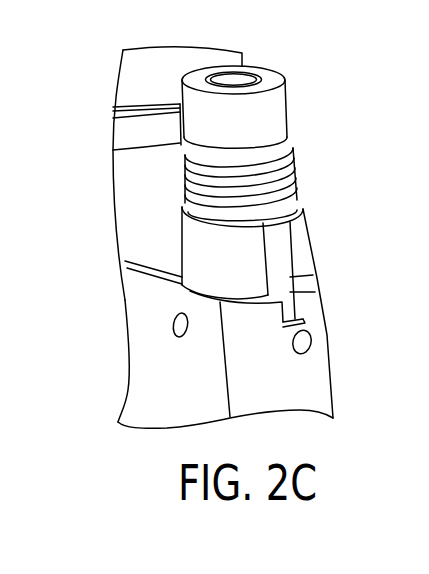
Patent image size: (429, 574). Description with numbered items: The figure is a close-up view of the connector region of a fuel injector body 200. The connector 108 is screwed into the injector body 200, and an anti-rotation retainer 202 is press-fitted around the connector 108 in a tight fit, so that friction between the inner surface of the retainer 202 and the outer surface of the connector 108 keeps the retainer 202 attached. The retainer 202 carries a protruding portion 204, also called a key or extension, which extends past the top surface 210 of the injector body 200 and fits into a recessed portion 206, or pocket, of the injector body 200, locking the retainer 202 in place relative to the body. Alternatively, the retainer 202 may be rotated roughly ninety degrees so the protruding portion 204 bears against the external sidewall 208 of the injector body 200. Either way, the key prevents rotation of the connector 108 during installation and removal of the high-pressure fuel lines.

The connector 108 is at (270, 109).
The fuel injector body 200 is at (145, 306).
The anti-rotation retainer 202 is at (305, 240).
The protruding portion 204 is at (291, 289).
The recessed portion 206 is at (291, 331).
The external sidewall 208 is at (176, 365).
The top surface 210 is at (174, 266).